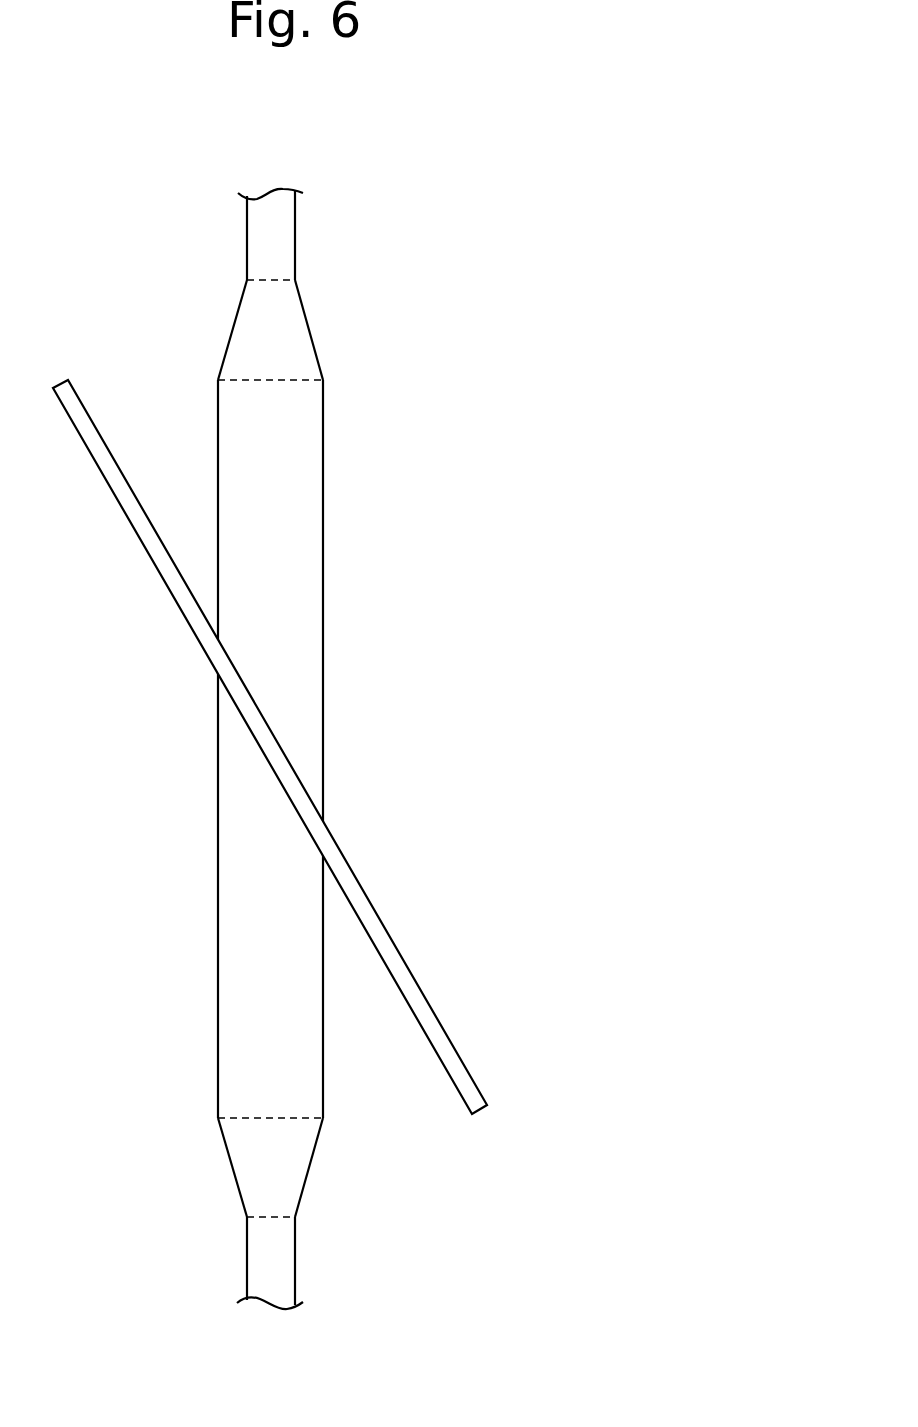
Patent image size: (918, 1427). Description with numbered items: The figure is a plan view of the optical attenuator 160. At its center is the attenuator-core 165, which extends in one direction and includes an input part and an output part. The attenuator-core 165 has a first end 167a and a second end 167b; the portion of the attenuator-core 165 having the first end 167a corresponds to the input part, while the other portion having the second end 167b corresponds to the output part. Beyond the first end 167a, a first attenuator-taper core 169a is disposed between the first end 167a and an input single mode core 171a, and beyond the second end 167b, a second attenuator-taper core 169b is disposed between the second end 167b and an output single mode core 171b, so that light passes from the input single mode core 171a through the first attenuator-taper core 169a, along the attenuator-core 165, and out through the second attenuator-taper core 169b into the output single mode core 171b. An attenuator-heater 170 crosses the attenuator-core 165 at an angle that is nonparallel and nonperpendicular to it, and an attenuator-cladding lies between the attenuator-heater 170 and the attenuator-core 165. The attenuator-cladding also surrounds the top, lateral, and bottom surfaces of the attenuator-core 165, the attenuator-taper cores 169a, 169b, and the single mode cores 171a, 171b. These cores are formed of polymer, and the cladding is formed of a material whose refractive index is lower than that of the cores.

The optical attenuator 160 is at (639, 131).
The attenuator-core 165 is at (312, 593).
The first end 167a is at (243, 1114).
The second end 167b is at (300, 376).
The first attenuator-taper core 169a is at (283, 1175).
The second attenuator-taper core 169b is at (283, 316).
The attenuator-heater 170 is at (442, 1037).
The input single mode core 171a is at (283, 1263).
The output single mode core 171b is at (283, 237).